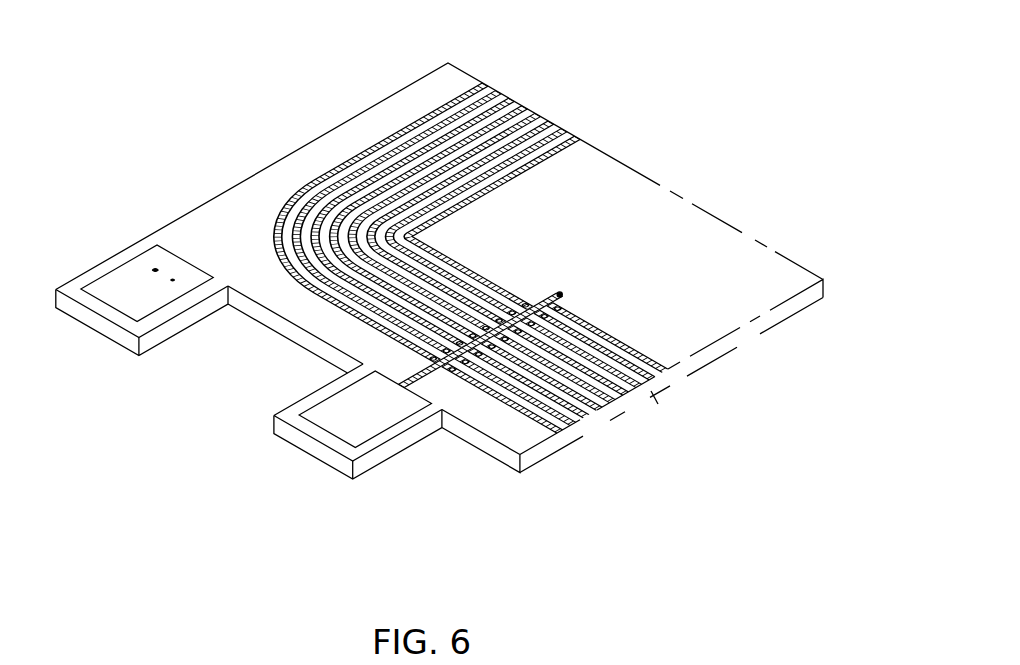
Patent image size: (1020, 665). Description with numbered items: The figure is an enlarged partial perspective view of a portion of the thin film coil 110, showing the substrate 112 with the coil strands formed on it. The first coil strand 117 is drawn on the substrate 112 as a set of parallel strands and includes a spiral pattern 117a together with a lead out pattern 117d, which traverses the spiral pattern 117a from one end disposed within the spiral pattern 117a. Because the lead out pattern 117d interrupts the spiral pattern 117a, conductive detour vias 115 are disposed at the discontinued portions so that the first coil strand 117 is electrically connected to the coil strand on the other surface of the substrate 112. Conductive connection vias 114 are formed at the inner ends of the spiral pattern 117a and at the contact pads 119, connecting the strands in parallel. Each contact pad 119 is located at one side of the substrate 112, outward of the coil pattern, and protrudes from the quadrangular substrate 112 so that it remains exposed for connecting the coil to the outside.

The thin film coil 110 is at (552, 96).
The substrate 112 is at (695, 243).
The connection vias 114 is at (560, 292).
The detour vias 115 is at (662, 413).
The first coil strand 117 is at (519, 349).
The spiral pattern 117a is at (528, 393).
The lead out pattern 117d is at (445, 366).
The contact pad 119 is at (338, 412).